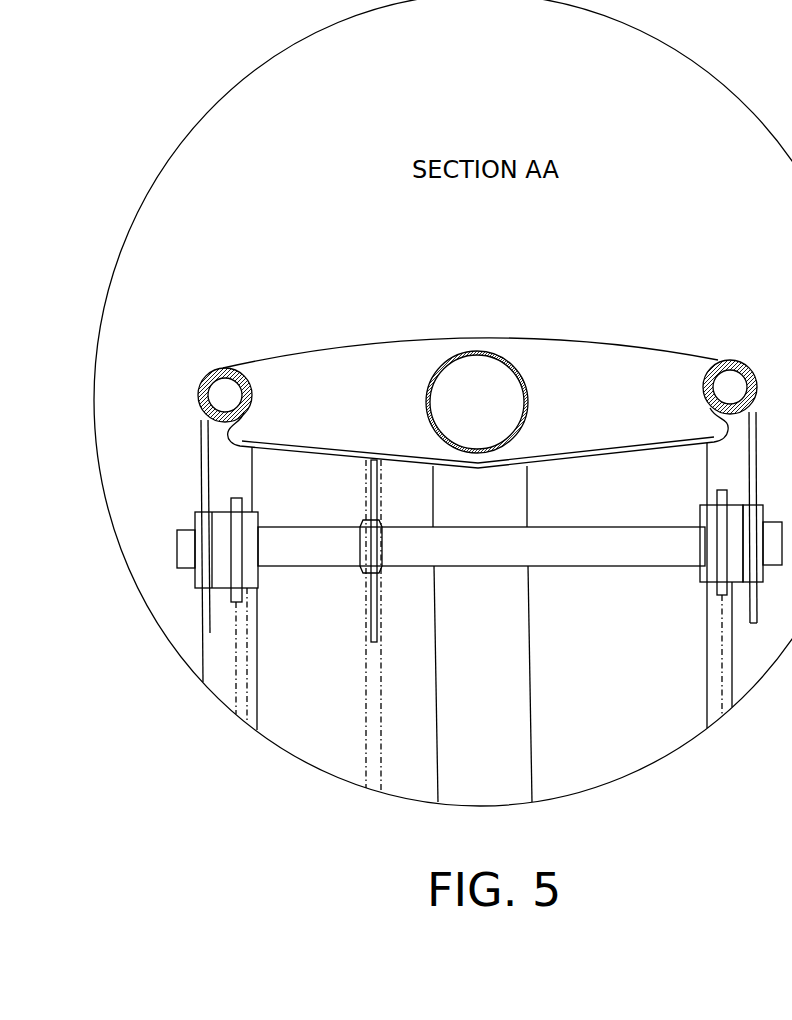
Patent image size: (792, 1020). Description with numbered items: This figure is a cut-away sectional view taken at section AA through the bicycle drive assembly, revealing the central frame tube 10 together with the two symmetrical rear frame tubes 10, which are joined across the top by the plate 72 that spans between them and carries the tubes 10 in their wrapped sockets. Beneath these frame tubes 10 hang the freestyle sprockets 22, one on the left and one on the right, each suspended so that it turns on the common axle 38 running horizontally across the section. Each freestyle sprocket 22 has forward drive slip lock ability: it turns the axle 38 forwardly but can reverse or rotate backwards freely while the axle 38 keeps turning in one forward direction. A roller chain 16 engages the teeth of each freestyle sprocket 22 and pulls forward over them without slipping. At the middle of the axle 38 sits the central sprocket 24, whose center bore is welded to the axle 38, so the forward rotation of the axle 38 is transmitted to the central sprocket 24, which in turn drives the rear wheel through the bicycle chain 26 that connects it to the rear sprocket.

The frame tube 10 is at (223, 368).
The plate 72 is at (565, 365).
The axle 38 is at (494, 559).
The freestyle sprocket 22 is at (237, 600).
The central sprocket 24 is at (375, 618).
The roller chain 16 is at (240, 692).
The bicycle chain 26 is at (378, 708).